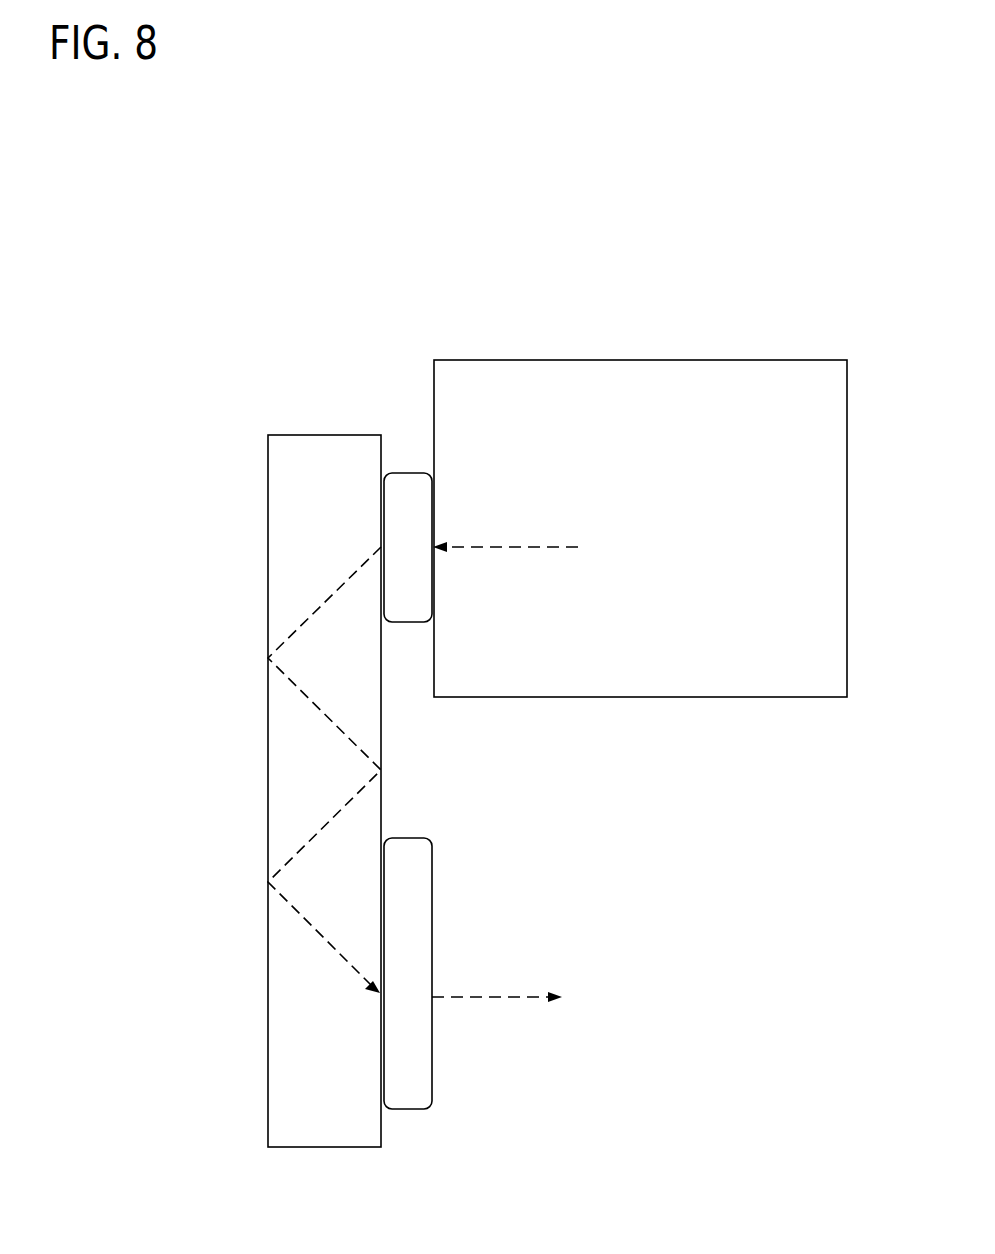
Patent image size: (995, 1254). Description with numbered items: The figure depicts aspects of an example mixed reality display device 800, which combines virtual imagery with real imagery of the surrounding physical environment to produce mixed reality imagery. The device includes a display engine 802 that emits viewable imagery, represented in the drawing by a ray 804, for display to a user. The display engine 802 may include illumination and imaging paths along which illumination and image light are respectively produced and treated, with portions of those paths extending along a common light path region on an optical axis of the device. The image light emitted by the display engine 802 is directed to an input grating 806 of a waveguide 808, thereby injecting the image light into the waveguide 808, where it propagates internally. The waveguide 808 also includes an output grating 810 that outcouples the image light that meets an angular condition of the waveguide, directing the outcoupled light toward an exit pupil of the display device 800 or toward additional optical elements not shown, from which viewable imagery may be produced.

The mixed reality display device 800 is at (523, 276).
The display engine 802 is at (745, 393).
The ray 804 is at (552, 549).
The input grating 806 is at (408, 473).
The waveguide 808 is at (267, 434).
The output grating 810 is at (423, 838).